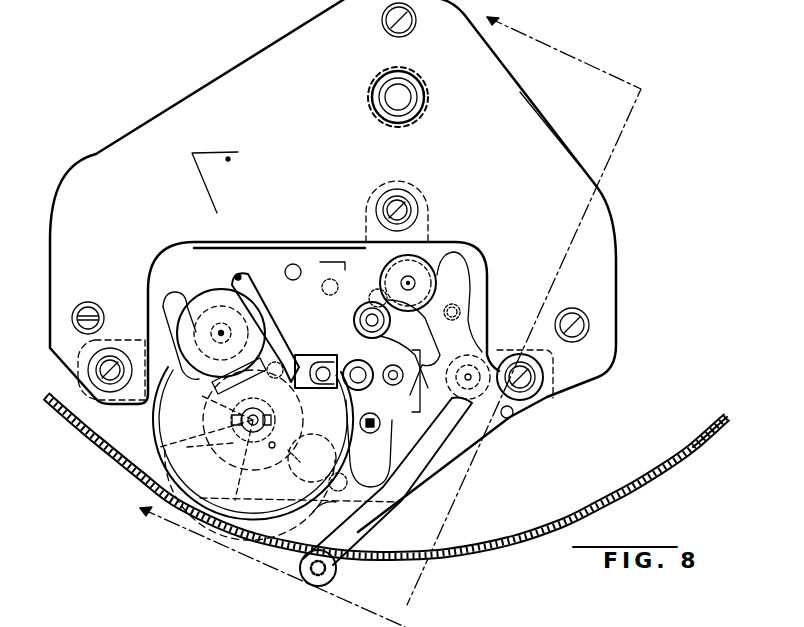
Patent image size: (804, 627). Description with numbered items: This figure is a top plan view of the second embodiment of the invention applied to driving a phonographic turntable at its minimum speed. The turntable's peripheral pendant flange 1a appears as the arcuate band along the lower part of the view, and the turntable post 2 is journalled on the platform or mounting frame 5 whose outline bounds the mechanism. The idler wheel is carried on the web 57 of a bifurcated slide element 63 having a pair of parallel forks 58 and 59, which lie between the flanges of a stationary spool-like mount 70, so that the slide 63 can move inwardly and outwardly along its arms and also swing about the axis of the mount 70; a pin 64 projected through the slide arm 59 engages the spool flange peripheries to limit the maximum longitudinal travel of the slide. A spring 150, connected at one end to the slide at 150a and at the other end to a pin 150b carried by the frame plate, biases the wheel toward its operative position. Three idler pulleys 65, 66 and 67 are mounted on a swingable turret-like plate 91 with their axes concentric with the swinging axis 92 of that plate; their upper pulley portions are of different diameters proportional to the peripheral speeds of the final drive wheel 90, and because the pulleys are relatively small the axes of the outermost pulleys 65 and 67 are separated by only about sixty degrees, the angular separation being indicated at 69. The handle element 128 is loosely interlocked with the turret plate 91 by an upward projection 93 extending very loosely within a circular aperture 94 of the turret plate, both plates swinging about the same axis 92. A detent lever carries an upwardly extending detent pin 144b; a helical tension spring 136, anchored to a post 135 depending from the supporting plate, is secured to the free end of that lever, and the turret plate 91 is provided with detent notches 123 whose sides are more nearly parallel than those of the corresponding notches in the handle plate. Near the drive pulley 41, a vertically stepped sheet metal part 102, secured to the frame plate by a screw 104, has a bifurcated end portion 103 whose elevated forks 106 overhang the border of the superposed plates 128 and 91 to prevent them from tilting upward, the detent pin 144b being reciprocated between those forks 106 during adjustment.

The peripheral pendant flange 1a is at (650, 487).
The turntable post 2 is at (400, 97).
The platform or mounting frame 5 is at (536, 143).
The drive pulley 41 is at (404, 372).
The web of slide element 57 is at (235, 452).
The fork of slide 58 is at (222, 302).
The fork of slide 59 is at (172, 308).
The bifurcated slide element 63 is at (157, 447).
The pin 64 is at (238, 277).
The idler pulley 65 is at (373, 392).
The idler pulley 66 is at (400, 337).
The idler pulley 67 is at (434, 263).
The angle 69 is at (215, 182).
The spool-like mount 70 is at (204, 308).
The final drive wheel 90 is at (213, 418).
The turret plate 91 is at (448, 290).
The swinging axis 92 is at (468, 377).
The upward projection 93 is at (370, 433).
The circular aperture 94 is at (381, 423).
The sheet metal part 102 is at (285, 345).
The bifurcated end portion 103 is at (268, 420).
The screw 104 is at (215, 389).
The forks 106 is at (310, 348).
The detent notches 123 is at (333, 278).
The handle element 128 is at (360, 532).
The post 135 is at (455, 310).
The helical tension spring 136 is at (383, 293).
The detent pin 144b is at (330, 266).
The spring 150 is at (290, 450).
The spring connection on slide 150a is at (270, 447).
The pin 150b is at (313, 512).